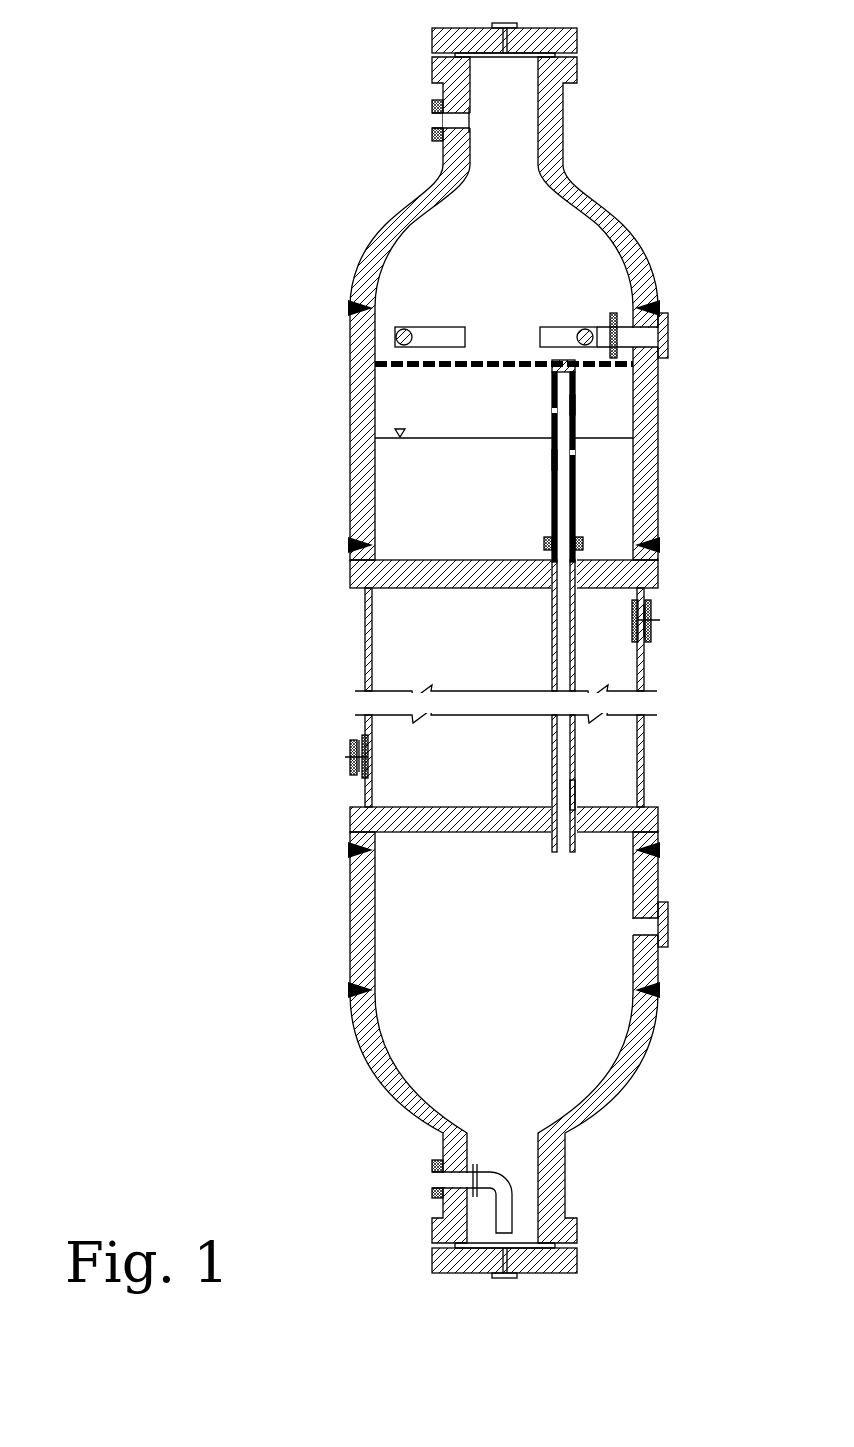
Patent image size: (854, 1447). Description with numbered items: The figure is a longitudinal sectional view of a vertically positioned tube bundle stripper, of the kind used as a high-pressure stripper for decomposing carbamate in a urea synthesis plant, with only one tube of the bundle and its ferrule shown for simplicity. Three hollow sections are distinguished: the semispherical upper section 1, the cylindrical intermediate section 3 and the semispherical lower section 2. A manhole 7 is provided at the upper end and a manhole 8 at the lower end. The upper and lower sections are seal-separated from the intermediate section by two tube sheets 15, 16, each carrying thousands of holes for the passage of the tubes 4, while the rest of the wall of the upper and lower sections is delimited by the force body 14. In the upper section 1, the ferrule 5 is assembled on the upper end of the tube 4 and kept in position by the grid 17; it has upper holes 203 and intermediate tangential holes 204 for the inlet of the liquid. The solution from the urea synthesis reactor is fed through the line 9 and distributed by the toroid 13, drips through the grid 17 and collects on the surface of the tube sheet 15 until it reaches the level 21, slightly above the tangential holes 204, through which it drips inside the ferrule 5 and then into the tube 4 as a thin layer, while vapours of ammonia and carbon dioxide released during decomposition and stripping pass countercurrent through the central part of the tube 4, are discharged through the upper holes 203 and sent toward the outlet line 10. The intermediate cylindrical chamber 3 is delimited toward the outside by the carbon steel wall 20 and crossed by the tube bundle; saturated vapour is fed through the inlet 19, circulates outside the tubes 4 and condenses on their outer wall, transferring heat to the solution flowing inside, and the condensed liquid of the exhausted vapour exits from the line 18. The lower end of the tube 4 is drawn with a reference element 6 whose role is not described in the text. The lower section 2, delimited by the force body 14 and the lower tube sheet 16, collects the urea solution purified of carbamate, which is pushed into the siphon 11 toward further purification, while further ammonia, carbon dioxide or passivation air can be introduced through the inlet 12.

The upper section 1 is at (512, 223).
The lower section 2 is at (511, 1093).
The intermediate section 3 is at (426, 628).
The tube 4 is at (562, 830).
The ferrule 5 is at (560, 414).
The pipe wall 6 is at (573, 820).
The manhole 7 is at (541, 38).
The manhole 8 is at (560, 1262).
The line 9 is at (655, 338).
The outlet line 10 is at (452, 123).
The siphon 11 is at (446, 1180).
The inlet 12 is at (655, 926).
The toroid 13 is at (563, 338).
The force body 14 is at (366, 372).
The tube sheet 15 is at (640, 572).
The tube sheet 16 is at (390, 820).
The grid 17 is at (486, 367).
The line 18 is at (356, 755).
The inlet 19 is at (658, 627).
The wall 20 is at (367, 608).
The level 21 is at (468, 439).
The upper holes 203 is at (573, 400).
The intermediate tangential holes 204 is at (567, 460).